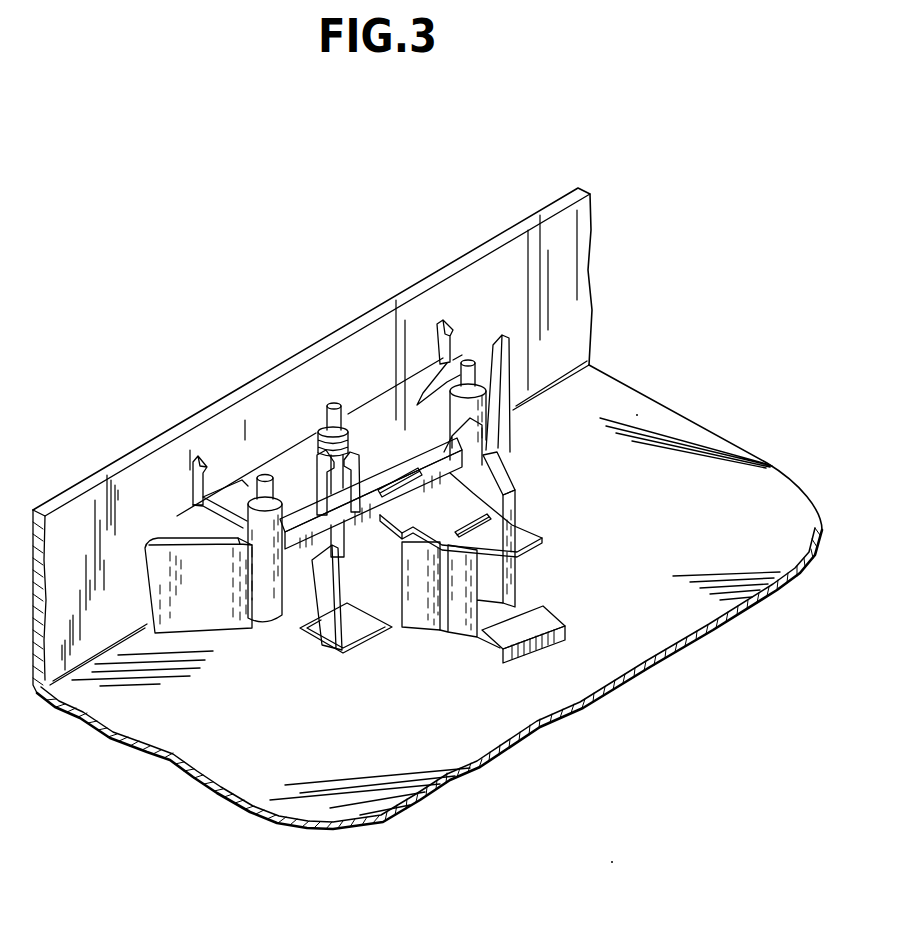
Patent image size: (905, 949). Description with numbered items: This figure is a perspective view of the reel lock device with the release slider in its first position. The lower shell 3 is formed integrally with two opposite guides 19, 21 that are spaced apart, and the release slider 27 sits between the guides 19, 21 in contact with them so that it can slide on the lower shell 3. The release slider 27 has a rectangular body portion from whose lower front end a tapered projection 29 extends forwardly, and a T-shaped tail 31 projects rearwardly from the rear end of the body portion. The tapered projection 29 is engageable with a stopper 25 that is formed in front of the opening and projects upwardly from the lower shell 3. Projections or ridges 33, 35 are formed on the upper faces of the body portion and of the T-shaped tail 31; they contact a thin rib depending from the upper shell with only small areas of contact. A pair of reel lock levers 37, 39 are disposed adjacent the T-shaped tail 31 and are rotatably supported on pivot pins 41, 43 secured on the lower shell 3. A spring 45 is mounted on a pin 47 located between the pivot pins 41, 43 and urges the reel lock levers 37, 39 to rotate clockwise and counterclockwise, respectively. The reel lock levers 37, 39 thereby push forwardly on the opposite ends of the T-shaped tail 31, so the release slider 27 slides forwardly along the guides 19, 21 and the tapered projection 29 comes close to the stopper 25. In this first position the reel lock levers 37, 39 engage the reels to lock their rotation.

The lower shell 3 is at (157, 762).
The guide 19 is at (417, 620).
The guide 21 is at (495, 495).
The stopper 25 is at (552, 626).
The release slider 27 is at (510, 595).
The tapered projection 29 is at (492, 628).
The T-shaped tail 31 is at (353, 543).
The projection 33 is at (478, 522).
The projection 35 is at (398, 478).
The reel lock lever 37 is at (280, 583).
The reel lock lever 39 is at (473, 437).
The pivot pin 41 is at (264, 476).
The pivot pin 43 is at (470, 362).
The spring 45 is at (267, 475).
The pin 47 is at (334, 403).